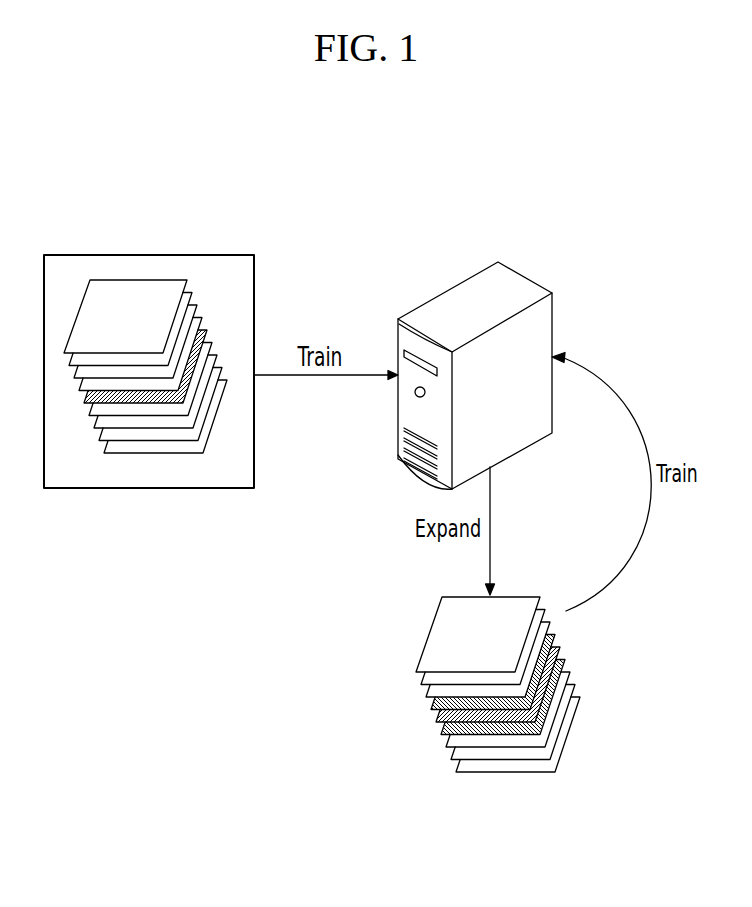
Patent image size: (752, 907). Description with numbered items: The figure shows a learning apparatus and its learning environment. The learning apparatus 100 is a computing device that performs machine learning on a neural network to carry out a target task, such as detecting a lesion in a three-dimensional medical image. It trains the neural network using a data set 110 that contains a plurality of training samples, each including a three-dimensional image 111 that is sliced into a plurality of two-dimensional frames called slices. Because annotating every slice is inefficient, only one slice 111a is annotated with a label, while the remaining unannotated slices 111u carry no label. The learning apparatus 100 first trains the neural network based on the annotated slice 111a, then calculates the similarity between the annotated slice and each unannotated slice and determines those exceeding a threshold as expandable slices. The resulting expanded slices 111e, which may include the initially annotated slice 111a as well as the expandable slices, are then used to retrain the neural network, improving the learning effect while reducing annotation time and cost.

The learning apparatus 100 is at (525, 277).
The data set 110 is at (95, 255).
The 3D image 111 is at (240, 202).
The unannotated slice 111u is at (145, 278).
The annotated slice 111a is at (205, 331).
The expanded slice 111e is at (554, 634).